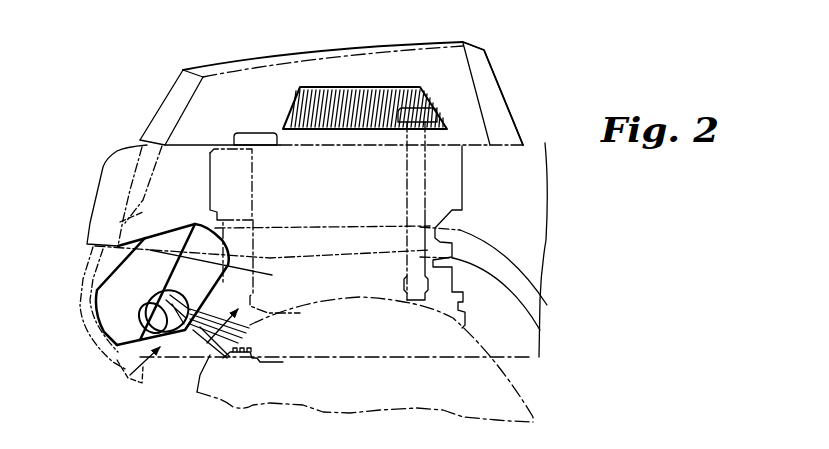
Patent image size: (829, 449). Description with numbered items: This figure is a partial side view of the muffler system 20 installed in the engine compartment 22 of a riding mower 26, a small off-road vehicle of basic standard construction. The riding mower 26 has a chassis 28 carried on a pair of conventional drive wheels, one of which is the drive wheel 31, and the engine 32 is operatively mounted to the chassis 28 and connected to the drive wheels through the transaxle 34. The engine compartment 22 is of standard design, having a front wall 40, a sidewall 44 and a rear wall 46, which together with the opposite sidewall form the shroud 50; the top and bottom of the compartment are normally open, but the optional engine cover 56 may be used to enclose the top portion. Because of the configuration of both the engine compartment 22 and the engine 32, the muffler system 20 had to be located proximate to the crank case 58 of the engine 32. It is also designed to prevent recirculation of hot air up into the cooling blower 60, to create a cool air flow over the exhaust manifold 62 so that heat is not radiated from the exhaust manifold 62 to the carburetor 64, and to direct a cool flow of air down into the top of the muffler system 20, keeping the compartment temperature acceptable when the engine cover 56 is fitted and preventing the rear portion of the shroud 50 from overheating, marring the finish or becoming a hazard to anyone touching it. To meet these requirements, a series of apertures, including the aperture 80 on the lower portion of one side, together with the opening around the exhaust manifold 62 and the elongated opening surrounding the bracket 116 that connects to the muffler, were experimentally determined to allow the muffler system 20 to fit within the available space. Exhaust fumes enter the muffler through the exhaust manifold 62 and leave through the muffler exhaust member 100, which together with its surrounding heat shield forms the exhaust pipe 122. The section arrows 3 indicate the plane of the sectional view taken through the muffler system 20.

The riding mower 26 is at (190, 55).
The engine cover 56 is at (413, 50).
The cooling blower 60 is at (312, 110).
The engine 32 is at (432, 135).
The engine compartment 22 is at (526, 165).
The front wall 40 is at (520, 208).
The rear wall 46 is at (105, 167).
The shroud 50 is at (103, 198).
The sidewall 44 is at (84, 227).
The muffler system 20 is at (98, 275).
The muffler exhaust member 100 is at (95, 300).
The carburetor 64 is at (232, 230).
The transaxle 34 is at (437, 312).
The chassis 28 is at (540, 343).
The drive wheel 31 is at (523, 400).
The exhaust manifold 62 is at (246, 323).
The bracket 116 is at (222, 368).
The crank case 58 is at (202, 330).
The aperture 80 is at (176, 369).
The exhaust pipe 122 is at (140, 368).
The section line 3- 3 is at (213, 210).